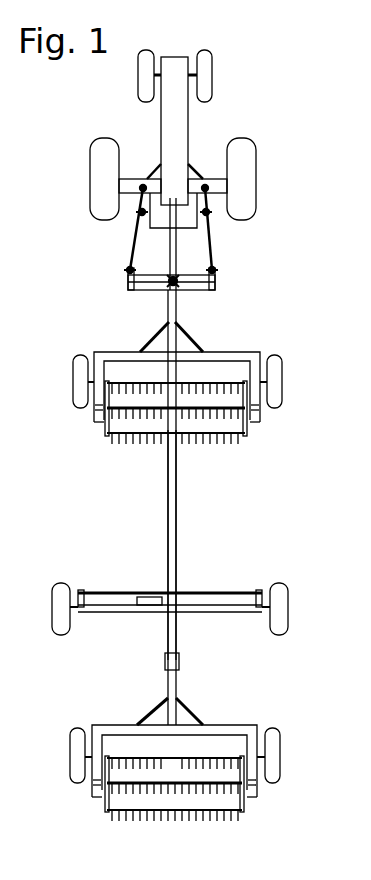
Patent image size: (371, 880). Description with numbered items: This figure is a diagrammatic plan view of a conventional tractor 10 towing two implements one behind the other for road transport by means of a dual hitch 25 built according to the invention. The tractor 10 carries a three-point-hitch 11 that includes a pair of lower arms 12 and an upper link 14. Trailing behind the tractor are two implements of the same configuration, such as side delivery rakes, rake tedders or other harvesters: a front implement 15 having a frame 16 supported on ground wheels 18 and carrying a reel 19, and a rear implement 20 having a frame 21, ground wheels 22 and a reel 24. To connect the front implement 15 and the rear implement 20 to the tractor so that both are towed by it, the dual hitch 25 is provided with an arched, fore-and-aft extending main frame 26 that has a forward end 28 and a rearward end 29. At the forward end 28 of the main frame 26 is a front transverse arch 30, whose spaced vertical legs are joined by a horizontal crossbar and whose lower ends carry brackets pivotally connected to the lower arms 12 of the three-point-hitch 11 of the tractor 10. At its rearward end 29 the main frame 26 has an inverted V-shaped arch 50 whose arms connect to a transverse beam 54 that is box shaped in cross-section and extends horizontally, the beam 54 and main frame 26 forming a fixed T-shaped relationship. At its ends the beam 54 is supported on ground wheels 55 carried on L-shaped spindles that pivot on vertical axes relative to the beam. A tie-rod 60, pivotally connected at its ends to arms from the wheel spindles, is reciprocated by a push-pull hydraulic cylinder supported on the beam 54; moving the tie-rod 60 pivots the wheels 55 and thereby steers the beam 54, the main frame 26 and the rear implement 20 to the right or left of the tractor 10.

The tractor 10 is at (175, 123).
The three-point-hitch 11 is at (112, 256).
The lower arms 12 is at (212, 247).
The upper link 14 is at (172, 246).
The front transverse arch 30 is at (252, 281).
The forward end 28 is at (177, 320).
The front implement 15 is at (254, 328).
The frame 16 is at (118, 350).
The ground wheels 18 is at (273, 390).
The reel 19 is at (245, 432).
The dual hitch 25 is at (202, 502).
The main frame 26 is at (168, 490).
The rearward end 29 is at (173, 582).
The inverted V-shaped arch 50 is at (141, 626).
The transverse beam 54 is at (222, 612).
The ground wheels 55 is at (280, 620).
The tie-rod 60 is at (137, 593).
The rear implement 20 is at (256, 699).
The frame 21 is at (122, 725).
The ground wheels 22 is at (272, 753).
The reel 24 is at (240, 810).